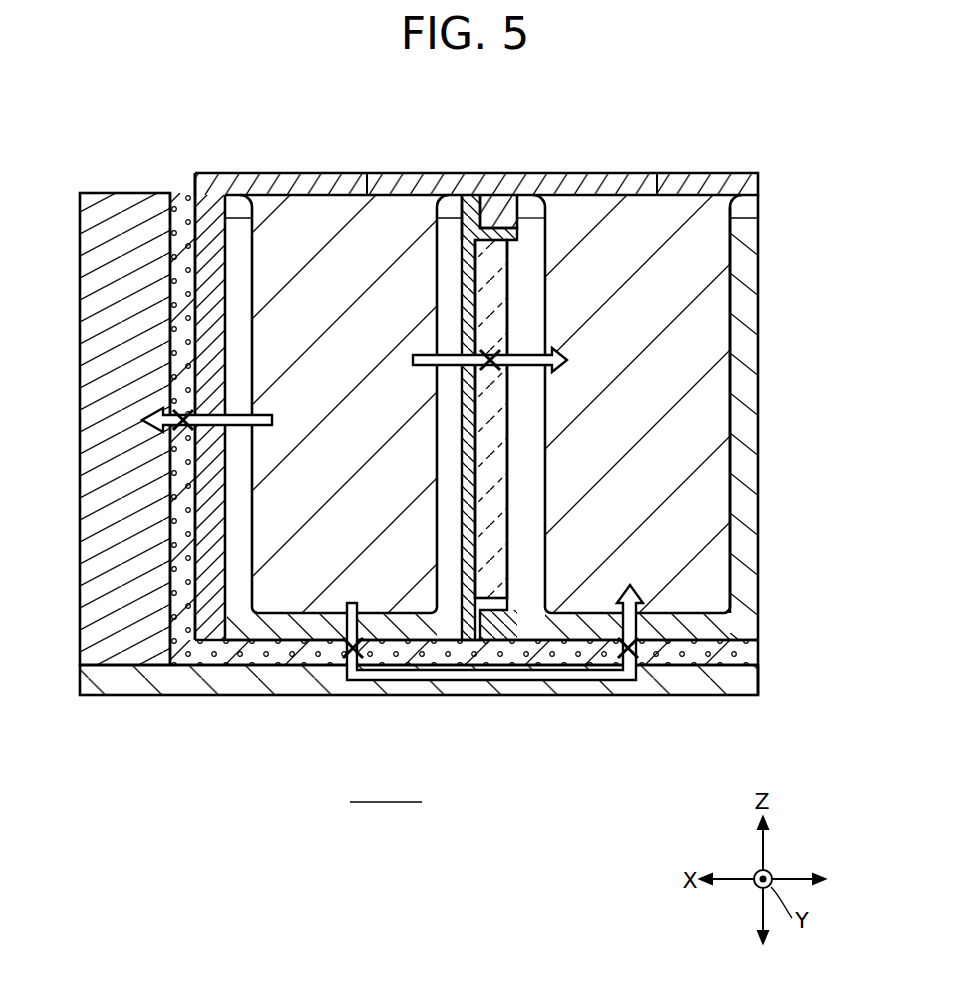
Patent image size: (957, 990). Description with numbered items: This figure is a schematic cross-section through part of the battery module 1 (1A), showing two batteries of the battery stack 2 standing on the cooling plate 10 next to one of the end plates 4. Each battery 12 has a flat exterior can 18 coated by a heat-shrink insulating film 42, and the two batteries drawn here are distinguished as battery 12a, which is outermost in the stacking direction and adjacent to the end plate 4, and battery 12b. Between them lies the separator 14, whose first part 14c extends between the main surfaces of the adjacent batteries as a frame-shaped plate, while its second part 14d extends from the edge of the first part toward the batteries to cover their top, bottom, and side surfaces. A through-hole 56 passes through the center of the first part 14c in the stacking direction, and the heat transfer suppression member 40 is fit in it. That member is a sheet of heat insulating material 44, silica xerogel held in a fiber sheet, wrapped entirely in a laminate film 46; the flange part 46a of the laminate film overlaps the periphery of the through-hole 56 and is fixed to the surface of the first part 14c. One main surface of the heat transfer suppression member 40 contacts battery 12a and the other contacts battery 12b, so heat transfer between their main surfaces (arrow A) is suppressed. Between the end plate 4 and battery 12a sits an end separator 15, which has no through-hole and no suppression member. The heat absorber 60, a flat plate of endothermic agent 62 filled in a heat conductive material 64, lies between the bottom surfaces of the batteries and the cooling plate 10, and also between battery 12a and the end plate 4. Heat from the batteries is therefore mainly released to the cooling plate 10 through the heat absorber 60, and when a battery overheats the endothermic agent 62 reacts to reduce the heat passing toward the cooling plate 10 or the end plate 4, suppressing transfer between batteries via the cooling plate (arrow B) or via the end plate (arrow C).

The battery module 1 is at (461, 440).
The battery module 1A is at (461, 440).
The battery stack 2 is at (508, 153).
The end plate 4 is at (120, 193).
The cooling plate 10 is at (695, 697).
The battery 12 is at (488, 153).
The battery 12a is at (337, 184).
The battery 12b is at (619, 184).
The separator 14 is at (476, 160).
The first part 14c is at (490, 212).
The second part 14d is at (660, 155).
The end separator 15 is at (193, 187).
The exterior can 18 is at (243, 192).
The heat transfer suppression member 40 is at (443, 363).
The insulating film 42 is at (237, 217).
The heat insulating material 44 is at (636, 418).
The laminate film 46 is at (505, 320).
The flange part 46a is at (461, 208).
The through-hole 56 is at (523, 240).
The heat absorber 60 is at (480, 436).
The endothermic agent 62 is at (727, 658).
The heat conductive material 64 is at (712, 630).